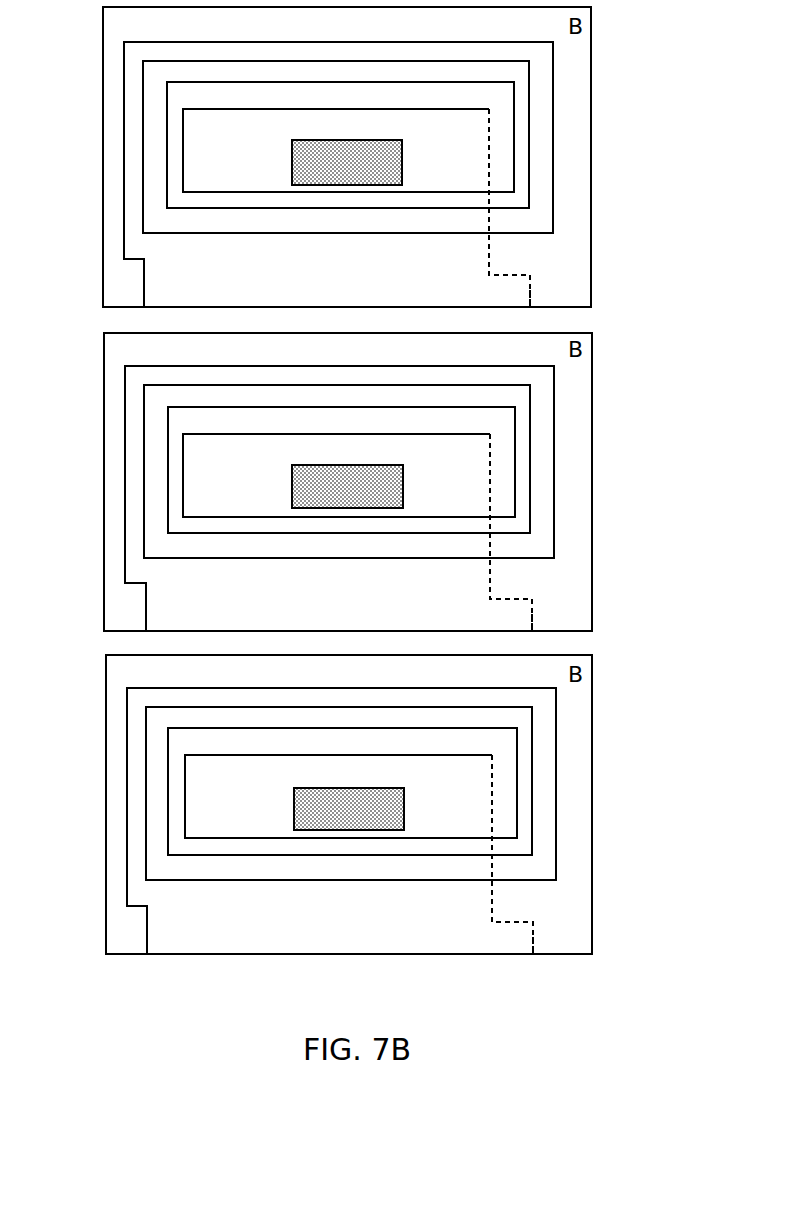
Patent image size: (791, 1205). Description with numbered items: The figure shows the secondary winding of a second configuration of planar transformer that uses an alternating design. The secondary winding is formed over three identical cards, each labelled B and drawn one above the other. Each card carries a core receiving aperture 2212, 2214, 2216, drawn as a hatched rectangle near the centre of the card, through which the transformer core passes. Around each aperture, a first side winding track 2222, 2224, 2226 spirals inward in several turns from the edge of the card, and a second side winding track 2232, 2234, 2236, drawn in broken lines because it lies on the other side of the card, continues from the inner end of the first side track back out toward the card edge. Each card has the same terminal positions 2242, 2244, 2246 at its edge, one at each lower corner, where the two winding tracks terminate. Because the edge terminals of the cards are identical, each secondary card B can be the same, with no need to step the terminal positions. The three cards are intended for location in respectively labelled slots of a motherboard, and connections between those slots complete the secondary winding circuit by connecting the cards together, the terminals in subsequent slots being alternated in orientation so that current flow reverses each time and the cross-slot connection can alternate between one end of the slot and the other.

The core receiving aperture 2212 is at (402, 165).
The core receiving aperture 2214 is at (403, 492).
The core receiving aperture 2216 is at (404, 814).
The first side winding track 2222 is at (553, 206).
The first side winding track 2224 is at (554, 530).
The first side winding track 2226 is at (557, 853).
The second side winding track 2232 is at (531, 290).
The second side winding track 2234 is at (533, 612).
The second side winding track 2236 is at (535, 933).
The terminal positions 2242 is at (531, 309).
The terminal positions 2244 is at (533, 633).
The terminal positions 2246 is at (533, 956).